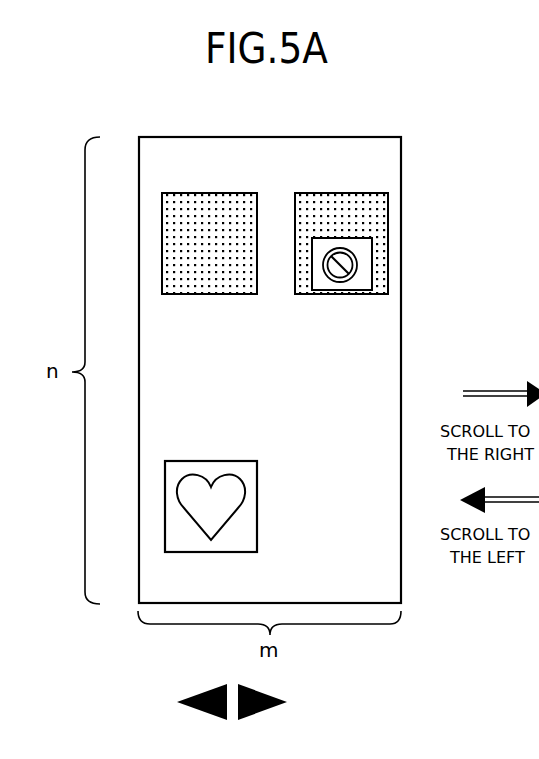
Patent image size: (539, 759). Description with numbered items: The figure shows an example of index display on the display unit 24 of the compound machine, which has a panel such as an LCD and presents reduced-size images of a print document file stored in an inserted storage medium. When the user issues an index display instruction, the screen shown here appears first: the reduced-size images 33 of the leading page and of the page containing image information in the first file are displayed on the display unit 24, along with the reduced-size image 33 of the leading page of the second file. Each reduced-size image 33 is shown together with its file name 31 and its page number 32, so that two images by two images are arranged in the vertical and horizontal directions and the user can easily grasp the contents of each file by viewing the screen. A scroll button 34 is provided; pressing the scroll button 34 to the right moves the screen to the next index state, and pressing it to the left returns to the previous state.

The display unit 24 is at (357, 137).
The file name 31 is at (180, 148).
The page number 32 is at (185, 325).
The reduced-size image 33 is at (162, 197).
The scroll button 34 is at (351, 702).